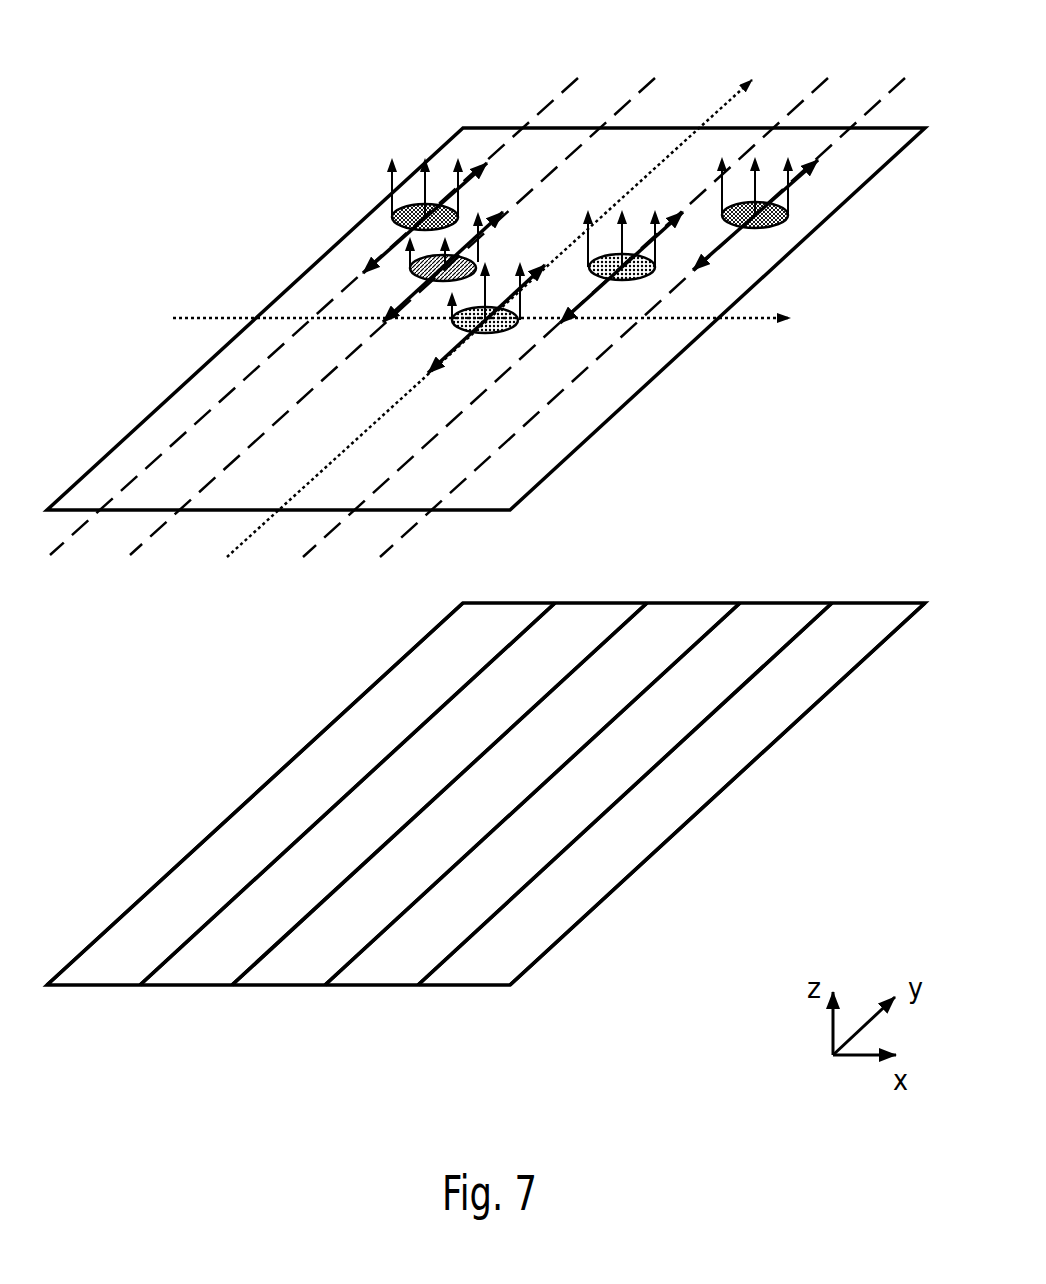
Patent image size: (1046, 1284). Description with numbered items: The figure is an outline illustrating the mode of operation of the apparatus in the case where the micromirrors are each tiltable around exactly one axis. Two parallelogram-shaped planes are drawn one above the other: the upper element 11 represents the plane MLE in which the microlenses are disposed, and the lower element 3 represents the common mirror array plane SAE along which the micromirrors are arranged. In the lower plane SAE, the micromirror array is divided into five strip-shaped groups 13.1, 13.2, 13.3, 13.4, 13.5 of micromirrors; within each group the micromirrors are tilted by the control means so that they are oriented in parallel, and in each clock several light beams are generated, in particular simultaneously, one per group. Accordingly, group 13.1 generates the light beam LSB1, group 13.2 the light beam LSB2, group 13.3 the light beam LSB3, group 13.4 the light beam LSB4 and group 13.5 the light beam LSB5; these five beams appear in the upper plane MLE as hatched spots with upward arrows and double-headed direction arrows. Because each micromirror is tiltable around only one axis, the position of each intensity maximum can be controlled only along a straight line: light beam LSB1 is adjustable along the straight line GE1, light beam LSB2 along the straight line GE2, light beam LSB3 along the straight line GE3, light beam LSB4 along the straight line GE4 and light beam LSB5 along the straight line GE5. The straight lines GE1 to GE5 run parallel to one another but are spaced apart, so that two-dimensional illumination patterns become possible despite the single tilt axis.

The light module 11 is at (140, 229).
The sensor arrangement 3 is at (125, 776).
The plane MLE is at (890, 167).
The common mirror array plane SAE is at (733, 782).
The straight line GE1 is at (552, 100).
The straight line GE2 is at (630, 100).
The straight line GE3 is at (725, 97).
The straight line GE4 is at (805, 97).
The straight line GE5 is at (880, 97).
The light beam LSB1 is at (395, 222).
The light beam LSB2 is at (413, 273).
The light beam LSB3 is at (510, 332).
The light beam LSB4 is at (640, 279).
The light beam LSB5 is at (785, 222).
The group of micromirrors 13.1 is at (104, 961).
The group of micromirrors 13.2 is at (207, 961).
The group of micromirrors 13.3 is at (292, 961).
The group of micromirrors 13.4 is at (385, 961).
The group of micromirrors 13.5 is at (478, 961).